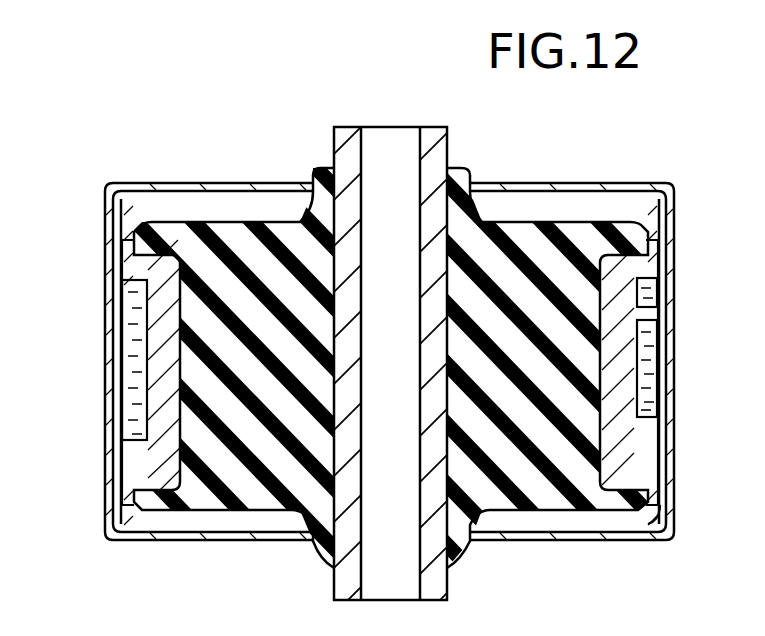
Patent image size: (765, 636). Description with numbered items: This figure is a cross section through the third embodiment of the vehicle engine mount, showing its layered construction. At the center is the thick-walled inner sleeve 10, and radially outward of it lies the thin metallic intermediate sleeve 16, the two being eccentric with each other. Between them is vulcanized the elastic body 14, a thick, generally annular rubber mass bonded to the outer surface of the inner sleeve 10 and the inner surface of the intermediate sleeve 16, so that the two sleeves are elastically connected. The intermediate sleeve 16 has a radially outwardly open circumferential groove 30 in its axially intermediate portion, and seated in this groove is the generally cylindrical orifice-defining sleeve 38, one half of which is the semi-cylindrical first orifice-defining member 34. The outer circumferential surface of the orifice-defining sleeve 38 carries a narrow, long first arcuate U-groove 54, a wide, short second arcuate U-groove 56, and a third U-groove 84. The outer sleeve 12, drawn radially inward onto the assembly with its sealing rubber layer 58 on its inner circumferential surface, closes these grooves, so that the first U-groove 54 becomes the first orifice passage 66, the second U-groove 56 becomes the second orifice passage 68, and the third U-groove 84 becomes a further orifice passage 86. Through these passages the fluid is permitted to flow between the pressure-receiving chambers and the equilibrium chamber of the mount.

The inner sleeve 10 is at (343, 578).
The outer sleeve 12 is at (118, 456).
The elastic body 14 is at (232, 232).
The intermediate sleeve 16 is at (662, 233).
The circumferential groove 30 is at (640, 460).
The first orifice-defining member 34 is at (73, 269).
The orifice-defining sleeve 38 is at (135, 276).
The first arcuate U-groove 54 is at (645, 288).
The second arcuate U-groove 56 is at (640, 412).
The sealing rubber layer 58 is at (668, 524).
The first orifice passage 66 is at (650, 295).
The second orifice passage 68 is at (652, 356).
The third U-groove 84 is at (130, 300).
The orifice passage 86 is at (130, 395).